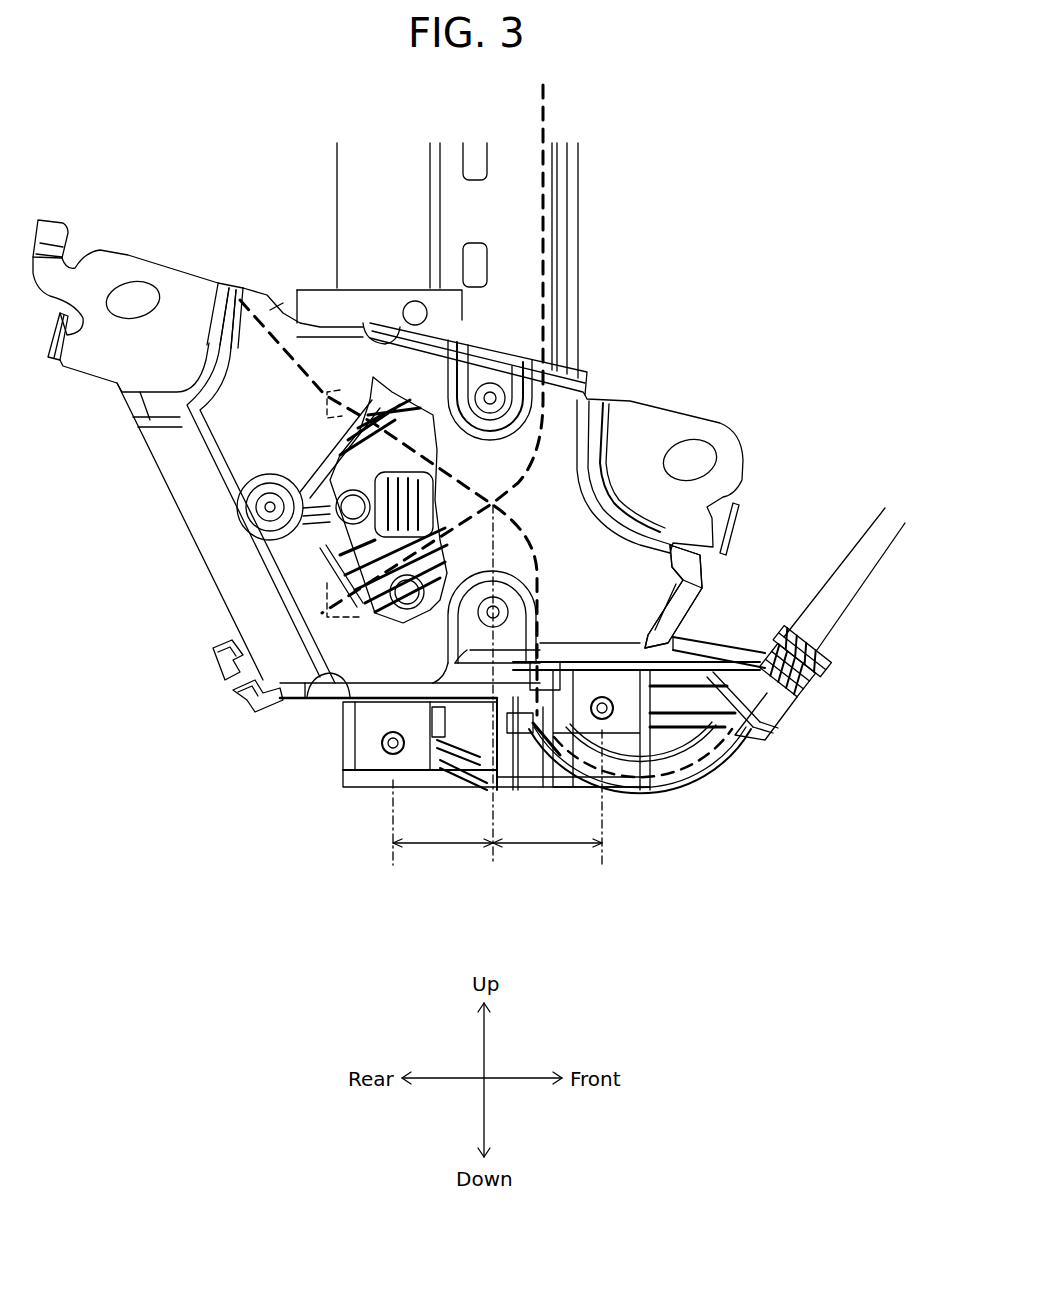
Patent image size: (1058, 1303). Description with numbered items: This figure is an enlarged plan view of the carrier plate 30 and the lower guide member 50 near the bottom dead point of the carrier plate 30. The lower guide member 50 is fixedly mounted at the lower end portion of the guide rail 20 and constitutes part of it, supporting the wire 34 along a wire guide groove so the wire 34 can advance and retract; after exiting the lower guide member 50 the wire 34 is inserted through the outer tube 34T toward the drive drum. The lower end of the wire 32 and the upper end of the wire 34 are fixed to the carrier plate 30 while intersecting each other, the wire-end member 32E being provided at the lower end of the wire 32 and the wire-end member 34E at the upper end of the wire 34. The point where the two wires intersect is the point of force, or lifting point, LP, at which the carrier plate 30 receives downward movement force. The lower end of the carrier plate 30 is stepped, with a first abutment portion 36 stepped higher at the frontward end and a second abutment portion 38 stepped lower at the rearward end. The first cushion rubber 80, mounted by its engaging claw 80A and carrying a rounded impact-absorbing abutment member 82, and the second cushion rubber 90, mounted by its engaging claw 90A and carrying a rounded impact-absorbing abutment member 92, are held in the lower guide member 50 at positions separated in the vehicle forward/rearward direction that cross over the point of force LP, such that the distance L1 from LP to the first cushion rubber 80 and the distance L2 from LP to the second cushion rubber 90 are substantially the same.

The guide rail 20 is at (362, 194).
The carrier plate 30 is at (224, 450).
The wire 32 is at (549, 242).
The wire-end member 32E is at (353, 600).
The wire 34 is at (700, 772).
The wire-end member 34E is at (238, 285).
The outer tube 34T is at (835, 614).
The first abutment portion 36 is at (673, 643).
The second abutment portion 38 is at (377, 703).
The lower guide member 50 is at (366, 730).
The first cushion rubber 80 is at (607, 640).
The impact-absorbing abutment member 82 is at (673, 596).
The engaging claw 80A is at (602, 718).
The second cushion rubber 90 is at (353, 663).
The impact-absorbing abutment member 92 is at (258, 696).
The engaging claw 90A is at (390, 752).
The point of force (lifting point) LP is at (503, 505).
The distance L1 is at (547, 797).
The distance L2 is at (443, 685).